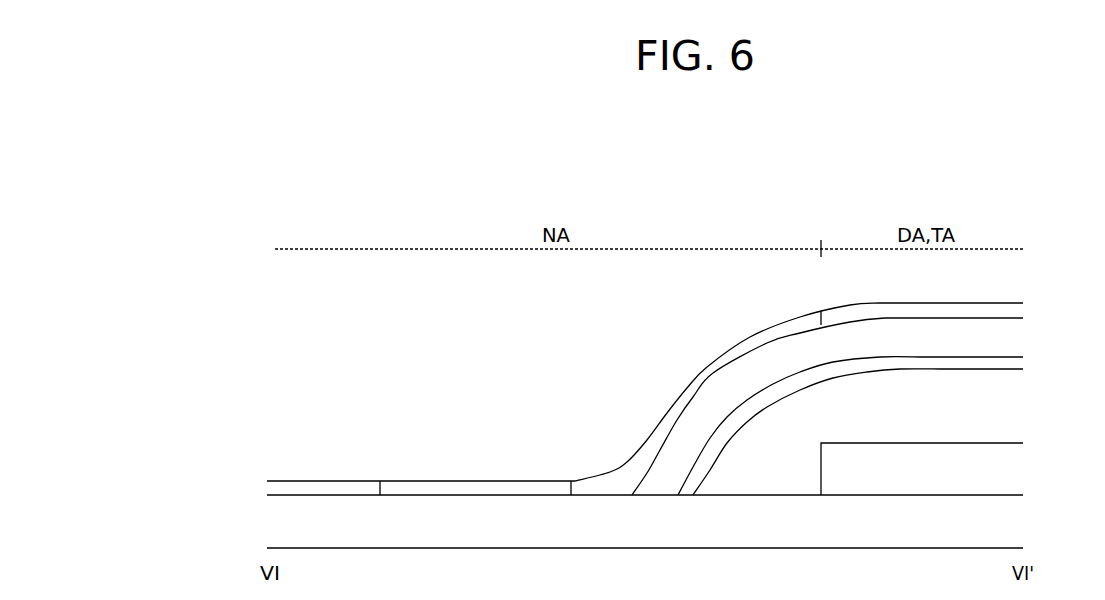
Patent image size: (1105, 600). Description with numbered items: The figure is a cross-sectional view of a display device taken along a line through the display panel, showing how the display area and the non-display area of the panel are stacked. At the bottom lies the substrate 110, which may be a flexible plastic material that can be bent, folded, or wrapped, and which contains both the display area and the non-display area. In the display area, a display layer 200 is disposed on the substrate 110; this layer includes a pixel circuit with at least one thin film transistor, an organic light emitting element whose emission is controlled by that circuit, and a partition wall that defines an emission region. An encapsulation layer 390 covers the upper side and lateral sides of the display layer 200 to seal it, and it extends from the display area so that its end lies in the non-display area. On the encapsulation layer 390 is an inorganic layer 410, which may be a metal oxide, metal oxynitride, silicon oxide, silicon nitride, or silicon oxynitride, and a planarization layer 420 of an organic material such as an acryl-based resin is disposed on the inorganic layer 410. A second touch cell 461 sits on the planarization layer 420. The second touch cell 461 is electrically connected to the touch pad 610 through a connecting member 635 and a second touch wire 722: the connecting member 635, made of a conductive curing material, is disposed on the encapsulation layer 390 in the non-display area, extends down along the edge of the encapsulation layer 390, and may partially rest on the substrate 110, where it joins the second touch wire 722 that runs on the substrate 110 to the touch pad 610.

The substrate 110 is at (1010, 521).
The display layer 200 is at (1010, 469).
The encapsulation layer 390 is at (1010, 409).
The inorganic layer 410 is at (1008, 364).
The planarization layer 420 is at (1010, 338).
The second touch cell 461 is at (1012, 311).
The touch pad 610 is at (322, 483).
The connecting member 635 is at (717, 370).
The second touch wire 722 is at (484, 483).